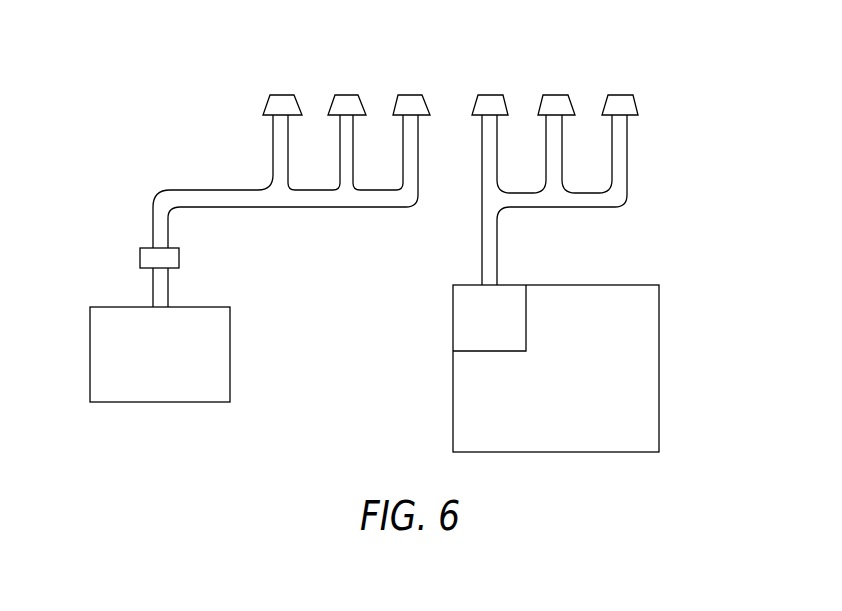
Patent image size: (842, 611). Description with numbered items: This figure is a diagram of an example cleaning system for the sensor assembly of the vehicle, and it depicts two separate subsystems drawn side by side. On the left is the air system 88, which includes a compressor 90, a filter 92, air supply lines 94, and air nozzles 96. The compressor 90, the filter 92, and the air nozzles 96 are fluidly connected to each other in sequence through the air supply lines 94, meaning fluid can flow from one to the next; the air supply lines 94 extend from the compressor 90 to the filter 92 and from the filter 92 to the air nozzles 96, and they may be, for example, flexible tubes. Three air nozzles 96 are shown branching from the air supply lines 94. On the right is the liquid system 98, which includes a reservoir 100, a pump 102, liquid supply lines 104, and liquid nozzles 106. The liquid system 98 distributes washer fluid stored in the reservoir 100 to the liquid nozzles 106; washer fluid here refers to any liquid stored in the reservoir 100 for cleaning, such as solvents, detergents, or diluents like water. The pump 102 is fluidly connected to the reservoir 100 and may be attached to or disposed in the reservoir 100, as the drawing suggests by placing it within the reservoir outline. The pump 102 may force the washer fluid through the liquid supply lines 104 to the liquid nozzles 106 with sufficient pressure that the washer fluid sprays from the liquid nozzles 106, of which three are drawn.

The air system 88 is at (120, 183).
The compressor 90 is at (230, 330).
The filter 92 is at (140, 256).
The air supply lines 94 is at (202, 208).
The air nozzles 96 is at (410, 95).
The liquid system 98 is at (676, 172).
The reservoir 100 is at (660, 312).
The pump 102 is at (500, 352).
The liquid supply lines 104 is at (548, 210).
The liquid nozzles 106 is at (620, 95).